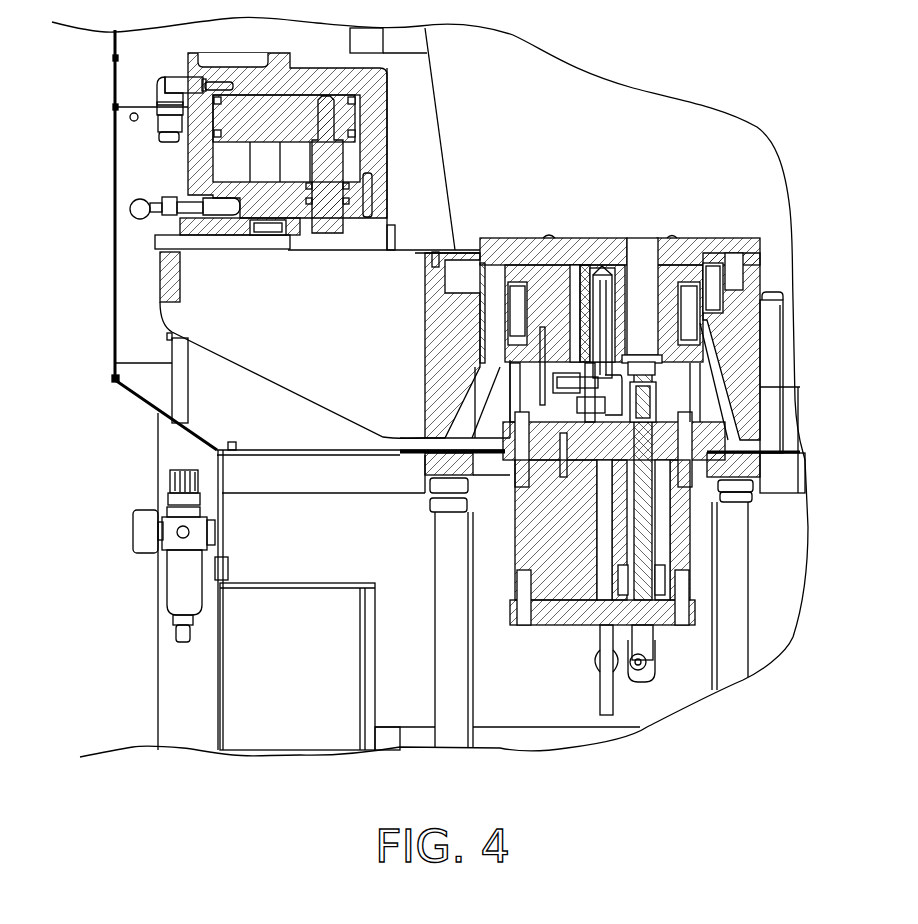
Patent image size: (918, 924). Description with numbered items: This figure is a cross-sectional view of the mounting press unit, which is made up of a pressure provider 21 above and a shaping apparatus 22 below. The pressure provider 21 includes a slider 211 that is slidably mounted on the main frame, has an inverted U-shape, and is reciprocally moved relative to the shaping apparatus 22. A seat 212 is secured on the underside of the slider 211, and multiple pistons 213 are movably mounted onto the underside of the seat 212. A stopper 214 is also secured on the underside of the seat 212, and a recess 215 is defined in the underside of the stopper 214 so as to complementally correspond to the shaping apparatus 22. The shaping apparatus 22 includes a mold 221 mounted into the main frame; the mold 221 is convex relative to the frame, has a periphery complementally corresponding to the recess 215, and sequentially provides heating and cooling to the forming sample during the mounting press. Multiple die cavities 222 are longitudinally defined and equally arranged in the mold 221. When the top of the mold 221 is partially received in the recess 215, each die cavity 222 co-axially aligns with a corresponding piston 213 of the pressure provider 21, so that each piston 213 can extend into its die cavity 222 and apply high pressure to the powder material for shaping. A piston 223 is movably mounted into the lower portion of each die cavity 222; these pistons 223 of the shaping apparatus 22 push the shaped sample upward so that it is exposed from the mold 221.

The pressure provider 21 is at (145, 142).
The slider 211 is at (200, 155).
The seat 212 is at (353, 157).
The piston 213 is at (328, 182).
The stopper 214 is at (207, 232).
The recess 215 is at (217, 240).
The shaping apparatus 22 is at (625, 222).
The mold 221 is at (679, 270).
The die cavity 222 is at (645, 277).
The piston 223 is at (647, 535).